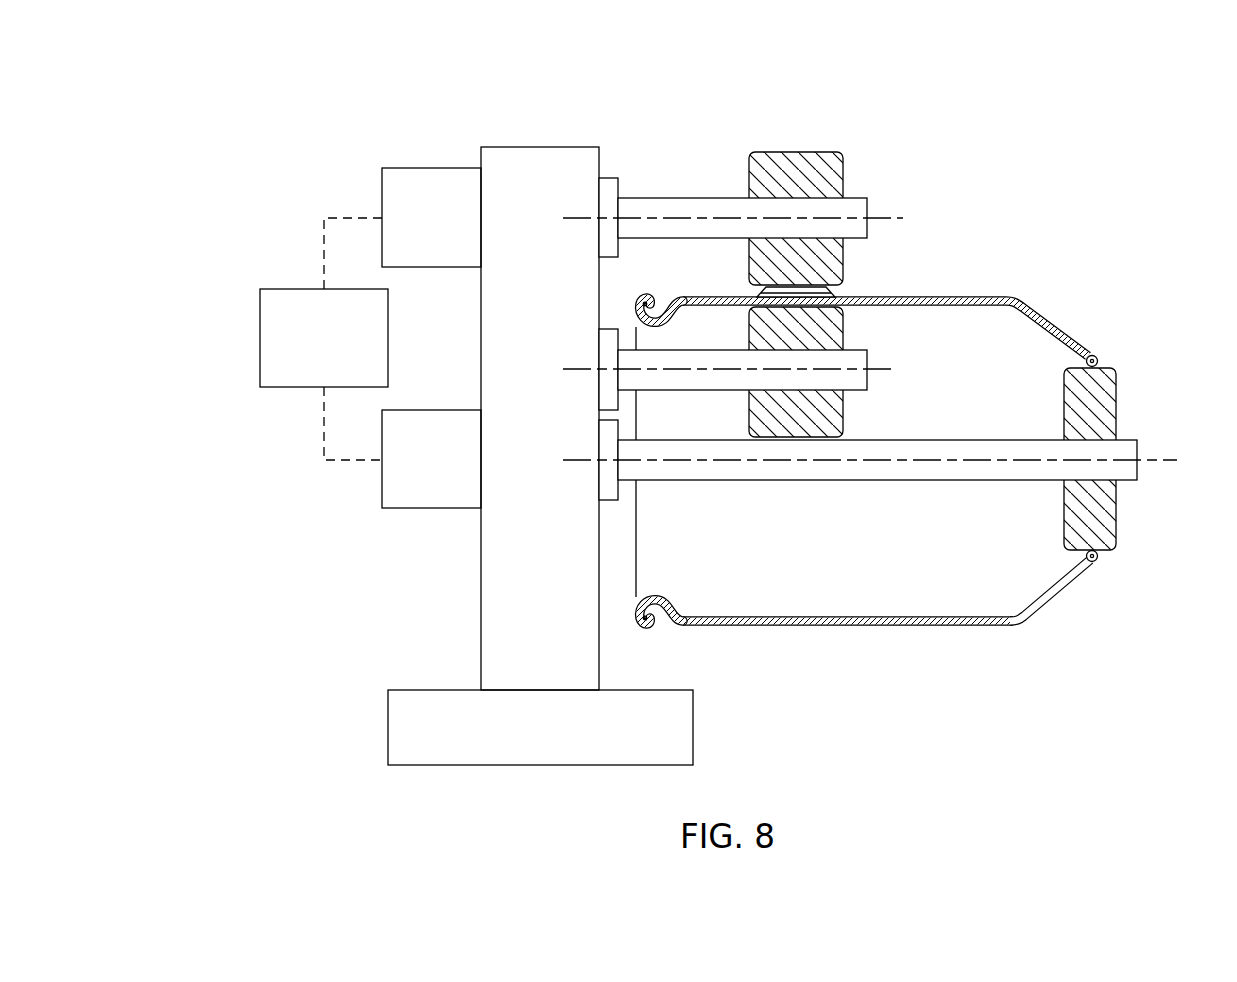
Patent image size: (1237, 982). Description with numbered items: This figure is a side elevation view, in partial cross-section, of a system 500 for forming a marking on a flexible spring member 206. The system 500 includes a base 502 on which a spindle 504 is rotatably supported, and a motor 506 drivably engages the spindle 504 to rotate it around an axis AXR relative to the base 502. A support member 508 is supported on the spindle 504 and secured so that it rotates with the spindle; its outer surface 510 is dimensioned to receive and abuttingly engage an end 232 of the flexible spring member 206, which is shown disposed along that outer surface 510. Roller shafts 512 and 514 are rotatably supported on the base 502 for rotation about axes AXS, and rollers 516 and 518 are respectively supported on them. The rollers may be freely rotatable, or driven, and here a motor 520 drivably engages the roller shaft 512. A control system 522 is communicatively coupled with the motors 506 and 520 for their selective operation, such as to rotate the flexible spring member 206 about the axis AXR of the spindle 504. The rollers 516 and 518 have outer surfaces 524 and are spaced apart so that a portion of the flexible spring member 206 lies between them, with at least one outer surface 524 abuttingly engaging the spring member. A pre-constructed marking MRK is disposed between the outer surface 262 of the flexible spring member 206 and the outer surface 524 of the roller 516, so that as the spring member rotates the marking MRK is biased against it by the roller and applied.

The system 500 is at (288, 106).
The base 502 is at (481, 603).
The spindle 504 is at (973, 470).
The motor 506 is at (382, 487).
The support member 508 is at (1092, 408).
The outer surface 510 is at (1105, 367).
The roller shaft 512 is at (688, 207).
The roller shaft 514 is at (700, 377).
The roller 516 is at (807, 173).
The roller 518 is at (822, 413).
The motor 520 is at (382, 192).
The control system 522 is at (305, 351).
The outer surface 524 is at (785, 150).
The flexible spring member 206 is at (818, 632).
The end 232 is at (1087, 327).
The outer surface 262 is at (913, 627).
The axis AXS is at (885, 215).
The axis AXR is at (1158, 460).
The pre-constructed marking MRK is at (863, 287).